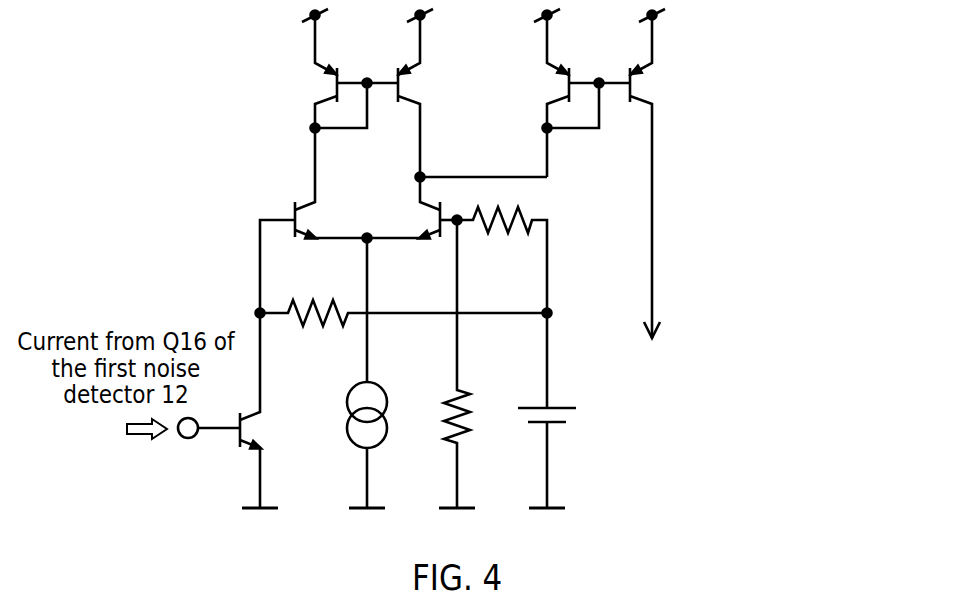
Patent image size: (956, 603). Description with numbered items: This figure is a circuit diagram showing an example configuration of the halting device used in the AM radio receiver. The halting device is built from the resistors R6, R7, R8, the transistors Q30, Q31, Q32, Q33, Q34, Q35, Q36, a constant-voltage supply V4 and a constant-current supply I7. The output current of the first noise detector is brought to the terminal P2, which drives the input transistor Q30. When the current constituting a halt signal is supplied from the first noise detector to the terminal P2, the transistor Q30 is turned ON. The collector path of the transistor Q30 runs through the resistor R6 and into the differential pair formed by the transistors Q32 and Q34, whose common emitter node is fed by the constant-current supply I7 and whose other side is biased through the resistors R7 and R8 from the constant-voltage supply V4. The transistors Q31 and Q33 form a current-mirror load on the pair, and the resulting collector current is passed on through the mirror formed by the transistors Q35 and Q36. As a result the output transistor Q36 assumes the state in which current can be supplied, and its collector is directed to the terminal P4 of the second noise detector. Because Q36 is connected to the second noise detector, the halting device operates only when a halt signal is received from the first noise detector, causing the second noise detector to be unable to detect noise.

The transistor Q30 is at (245, 410).
The transistor Q31 is at (340, 74).
The transistor Q32 is at (338, 223).
The transistor Q33 is at (472, 98).
The transistor Q34 is at (425, 207).
The transistor Q35 is at (570, 96).
The transistor Q36 is at (658, 176).
The resistor R6 is at (406, 332).
The resistor R7 is at (468, 364).
The resistor R8 is at (502, 260).
The constant-current supply I7 is at (377, 373).
The constant-voltage supply V4 is at (548, 410).
The terminal P2 is at (188, 438).
The terminal P4 is at (771, 315).